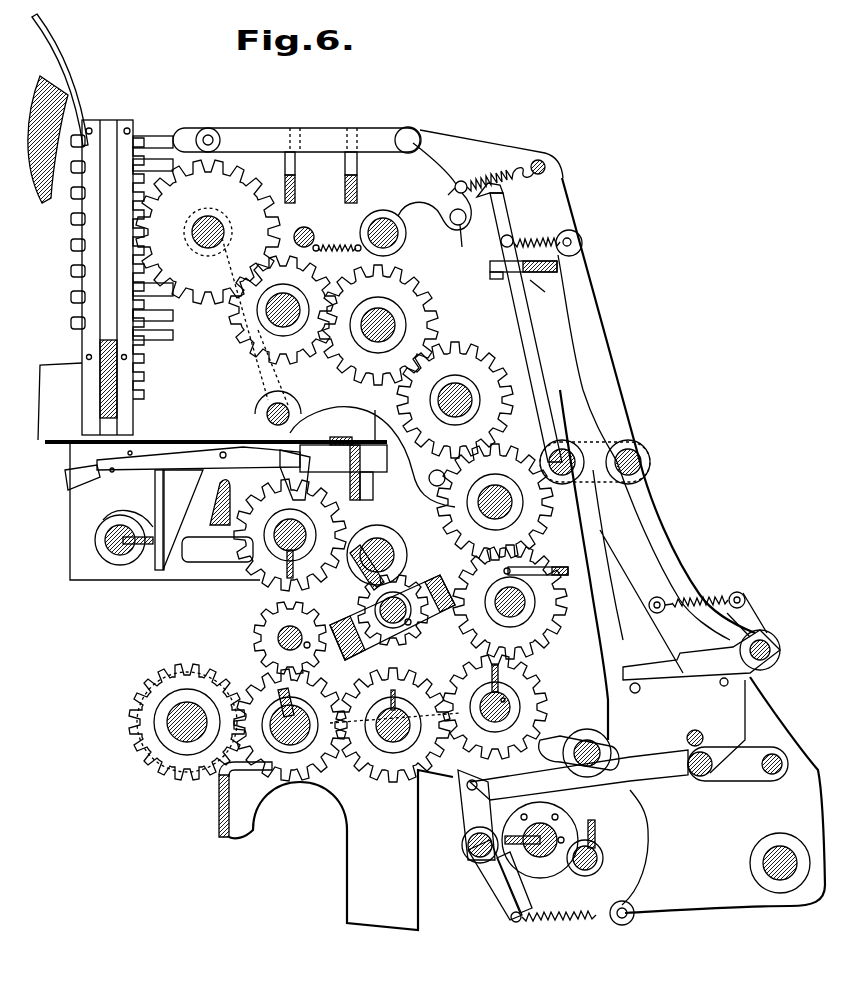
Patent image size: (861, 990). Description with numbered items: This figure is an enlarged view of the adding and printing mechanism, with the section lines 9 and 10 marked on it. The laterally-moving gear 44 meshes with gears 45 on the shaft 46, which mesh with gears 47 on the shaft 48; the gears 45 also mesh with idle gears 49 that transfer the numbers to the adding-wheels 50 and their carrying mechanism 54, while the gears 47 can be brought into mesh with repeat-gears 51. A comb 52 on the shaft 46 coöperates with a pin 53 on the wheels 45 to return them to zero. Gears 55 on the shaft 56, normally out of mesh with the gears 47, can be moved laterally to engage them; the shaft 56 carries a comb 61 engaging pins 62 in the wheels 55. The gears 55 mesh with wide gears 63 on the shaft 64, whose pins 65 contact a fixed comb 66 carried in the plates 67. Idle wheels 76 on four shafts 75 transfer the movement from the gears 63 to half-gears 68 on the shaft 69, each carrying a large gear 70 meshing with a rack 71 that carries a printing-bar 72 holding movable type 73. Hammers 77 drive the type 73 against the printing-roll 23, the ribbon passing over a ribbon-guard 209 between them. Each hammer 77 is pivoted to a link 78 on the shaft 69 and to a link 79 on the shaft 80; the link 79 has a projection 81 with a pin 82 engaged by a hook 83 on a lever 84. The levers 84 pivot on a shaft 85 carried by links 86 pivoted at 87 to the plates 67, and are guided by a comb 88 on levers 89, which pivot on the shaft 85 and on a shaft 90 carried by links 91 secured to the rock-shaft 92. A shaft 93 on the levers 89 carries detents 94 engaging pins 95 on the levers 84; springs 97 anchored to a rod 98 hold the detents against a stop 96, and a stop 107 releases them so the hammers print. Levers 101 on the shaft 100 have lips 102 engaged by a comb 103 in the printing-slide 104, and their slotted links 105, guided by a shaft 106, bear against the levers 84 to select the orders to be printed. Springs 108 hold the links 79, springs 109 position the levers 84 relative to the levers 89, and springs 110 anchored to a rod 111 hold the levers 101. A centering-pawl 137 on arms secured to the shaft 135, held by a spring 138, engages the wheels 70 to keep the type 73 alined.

The section line 9- 9 is at (431, 530).
The section line 10- 10 is at (495, 652).
The printing-roll 23 is at (64, 112).
The laterally-moving gear 44 is at (185, 775).
The gears 45 is at (275, 700).
The shaft 46 is at (250, 683).
The gears 47 is at (420, 635).
The shaft 48 is at (393, 725).
The idle gears 49 is at (265, 628).
The adding-wheels 50 is at (245, 578).
The repeat-gears 51 is at (408, 590).
The comb 52 is at (292, 692).
The pin 53 is at (297, 775).
The carrying mechanism 54 is at (216, 468).
The gears 55 is at (560, 744).
The shaft 56 is at (500, 708).
The comb 61 is at (510, 690).
The pins 62 is at (495, 707).
The wide gears 63 is at (548, 610).
The shaft 64 is at (486, 563).
The pins 65 is at (530, 560).
The fixed comb 66 is at (560, 563).
The plates 67 is at (759, 863).
The half-gears 68 is at (232, 272).
The shaft 69 is at (192, 235).
The large gear 70 is at (256, 183).
The rack 71 is at (140, 400).
The printing-bar 72 is at (88, 340).
The type 73 is at (71, 297).
The shafts 75 is at (270, 312).
The idle wheels 76 is at (425, 335).
The hammers 77 is at (300, 128).
The link 78 is at (232, 115).
The link 79 is at (408, 127).
The shaft 80 is at (396, 245).
The projection 81 is at (459, 181).
The pin 82 is at (490, 266).
The hook 83 is at (508, 199).
The lever 84 is at (530, 328).
The shaft 85 is at (550, 455).
The links 86 is at (640, 455).
The pivot 87 is at (652, 468).
The comb 88 is at (532, 282).
The levers 89 is at (575, 330).
The shaft 90 is at (700, 776).
The links 91 is at (740, 768).
The rock-shaft 92 is at (772, 755).
The shaft 93 is at (772, 648).
The detents 94 is at (701, 655).
The pins 95 is at (640, 692).
The stop 96 is at (724, 688).
The springs 97 is at (712, 597).
The rod 98 is at (657, 597).
The shaft 100 is at (478, 855).
The levers 101 is at (514, 922).
The lip 102 is at (548, 882).
The comb 103 is at (530, 828).
The printing-slide 104 is at (595, 845).
The slotted link 105 is at (620, 780).
The shaft 106 is at (612, 755).
The stop 107 is at (690, 733).
The springs 108 is at (502, 170).
The springs 109 is at (574, 232).
The springs 110 is at (572, 922).
The rod 111 is at (630, 920).
The shaft 135 is at (268, 404).
The centering-pawl 137 is at (312, 226).
The spring 138 is at (330, 246).
The ribbon-guard 209 is at (50, 44).